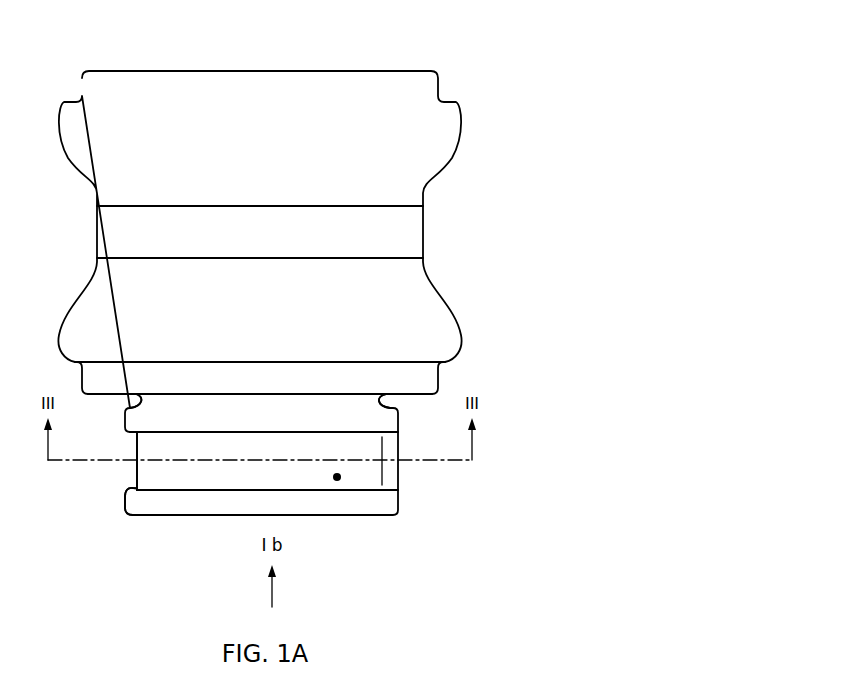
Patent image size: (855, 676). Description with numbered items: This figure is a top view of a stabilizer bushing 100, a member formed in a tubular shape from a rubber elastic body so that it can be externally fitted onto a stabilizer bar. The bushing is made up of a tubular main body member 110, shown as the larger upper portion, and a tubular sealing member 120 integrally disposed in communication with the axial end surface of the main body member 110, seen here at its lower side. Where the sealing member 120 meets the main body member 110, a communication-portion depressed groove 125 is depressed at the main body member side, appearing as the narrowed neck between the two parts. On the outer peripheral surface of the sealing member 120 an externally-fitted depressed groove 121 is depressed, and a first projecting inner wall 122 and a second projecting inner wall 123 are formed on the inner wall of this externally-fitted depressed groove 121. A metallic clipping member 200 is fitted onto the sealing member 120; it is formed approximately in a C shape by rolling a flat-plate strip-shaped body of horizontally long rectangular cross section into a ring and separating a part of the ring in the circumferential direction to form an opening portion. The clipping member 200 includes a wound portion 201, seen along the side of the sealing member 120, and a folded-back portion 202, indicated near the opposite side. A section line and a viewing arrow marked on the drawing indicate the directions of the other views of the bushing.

The stabilizer bushing 100 is at (368, 342).
The main body member 110 is at (468, 178).
The sealing member 120 is at (281, 462).
The externally-fitted depressed groove 121 is at (337, 477).
The first projecting inner wall 122 is at (242, 490).
The second projecting inner wall 123 is at (133, 490).
The communication-portion depressed groove 125 is at (240, 400).
The clipping member 200 is at (330, 532).
The wound portion 201 is at (182, 473).
The folded-back portion 202 is at (385, 478).